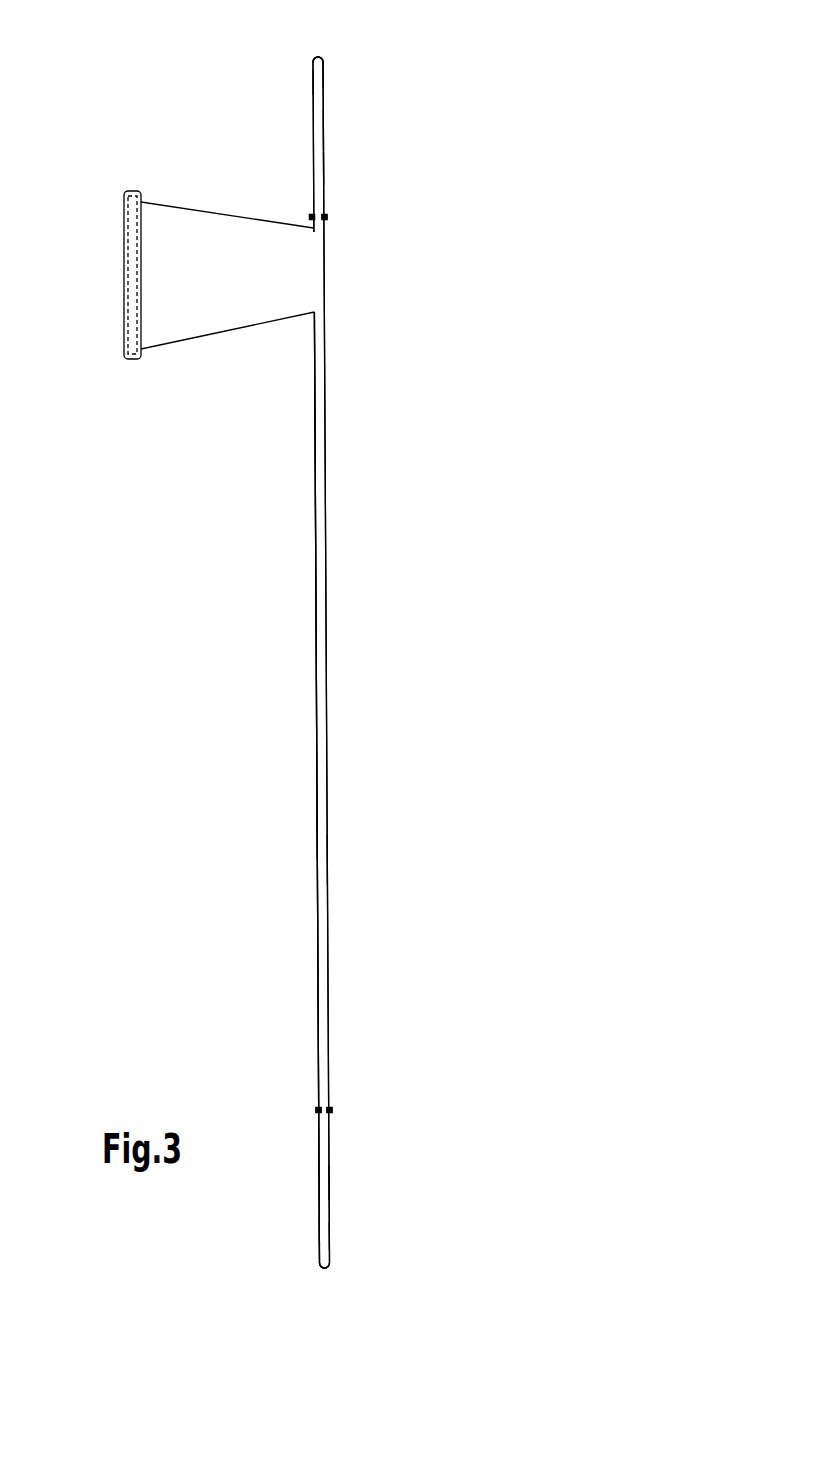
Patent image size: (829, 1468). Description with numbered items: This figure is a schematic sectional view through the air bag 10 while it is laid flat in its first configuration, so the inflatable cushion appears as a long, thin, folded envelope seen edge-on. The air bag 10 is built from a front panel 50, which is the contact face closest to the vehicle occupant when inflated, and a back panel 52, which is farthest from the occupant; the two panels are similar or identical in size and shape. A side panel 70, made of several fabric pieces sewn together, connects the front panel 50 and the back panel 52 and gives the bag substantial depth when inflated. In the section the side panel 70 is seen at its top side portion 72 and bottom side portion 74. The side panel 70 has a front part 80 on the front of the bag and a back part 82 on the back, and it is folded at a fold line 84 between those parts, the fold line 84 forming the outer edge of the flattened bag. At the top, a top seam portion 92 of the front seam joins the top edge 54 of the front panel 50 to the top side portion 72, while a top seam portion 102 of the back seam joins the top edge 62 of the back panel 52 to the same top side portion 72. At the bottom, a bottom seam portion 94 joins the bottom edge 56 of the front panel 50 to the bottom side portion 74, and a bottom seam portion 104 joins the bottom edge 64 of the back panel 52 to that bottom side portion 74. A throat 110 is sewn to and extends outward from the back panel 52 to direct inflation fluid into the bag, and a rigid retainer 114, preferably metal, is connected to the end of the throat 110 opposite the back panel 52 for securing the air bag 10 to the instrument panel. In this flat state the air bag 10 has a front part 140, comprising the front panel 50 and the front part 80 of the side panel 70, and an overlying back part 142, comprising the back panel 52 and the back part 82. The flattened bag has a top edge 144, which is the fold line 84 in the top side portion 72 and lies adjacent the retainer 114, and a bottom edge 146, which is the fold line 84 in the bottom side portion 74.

The air bag 10 is at (410, 512).
The front panel 50 is at (328, 640).
The back panel 52 is at (317, 667).
The top edge of the front panel 54 is at (325, 217).
The bottom edge of the front panel 56 is at (330, 1110).
The top edge of the back panel 62 is at (313, 221).
The bottom edge of the back panel 64 is at (318, 1110).
The side panel 70 is at (323, 132).
The top side portion 72 is at (323, 165).
The bottom side portion 74 is at (330, 1182).
The front part of the side panel 80 is at (323, 73).
The back part of the side panel 82 is at (313, 80).
The fold line 84 is at (318, 56).
The top seam portion 92 is at (325, 217).
The bottom seam portion 94 is at (330, 1110).
The top seam portion 102 is at (311, 217).
The bottom seam portion 104 is at (318, 1110).
The throat 110 is at (198, 212).
The retainer 114 is at (132, 212).
The front part of the air bag 140 is at (343, 860).
The back part of the air bag 142 is at (300, 834).
The top edge 144 is at (307, 56).
The bottom edge 146 is at (340, 1272).